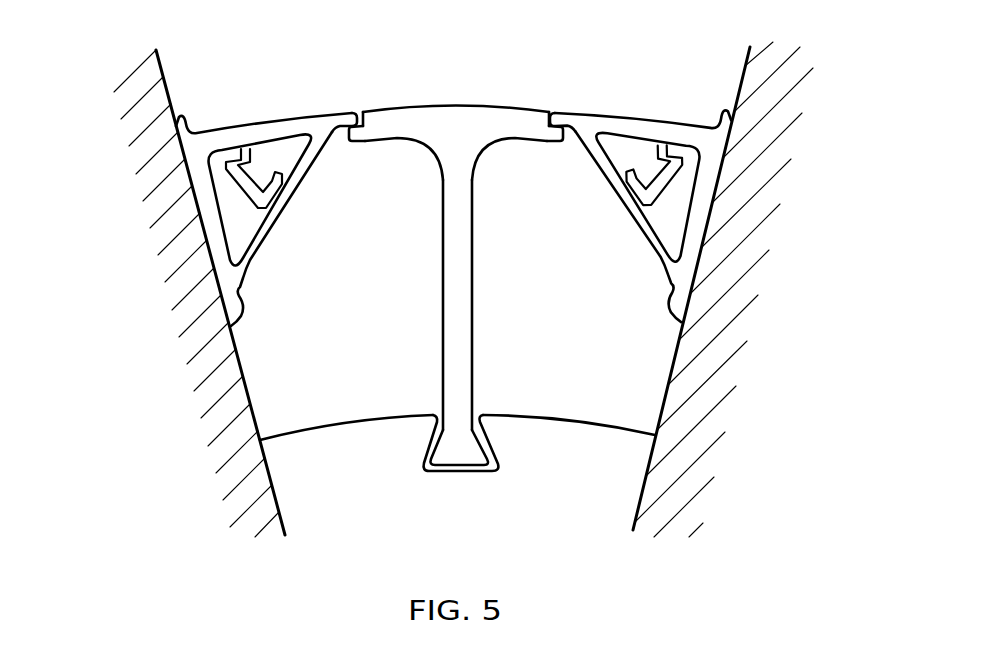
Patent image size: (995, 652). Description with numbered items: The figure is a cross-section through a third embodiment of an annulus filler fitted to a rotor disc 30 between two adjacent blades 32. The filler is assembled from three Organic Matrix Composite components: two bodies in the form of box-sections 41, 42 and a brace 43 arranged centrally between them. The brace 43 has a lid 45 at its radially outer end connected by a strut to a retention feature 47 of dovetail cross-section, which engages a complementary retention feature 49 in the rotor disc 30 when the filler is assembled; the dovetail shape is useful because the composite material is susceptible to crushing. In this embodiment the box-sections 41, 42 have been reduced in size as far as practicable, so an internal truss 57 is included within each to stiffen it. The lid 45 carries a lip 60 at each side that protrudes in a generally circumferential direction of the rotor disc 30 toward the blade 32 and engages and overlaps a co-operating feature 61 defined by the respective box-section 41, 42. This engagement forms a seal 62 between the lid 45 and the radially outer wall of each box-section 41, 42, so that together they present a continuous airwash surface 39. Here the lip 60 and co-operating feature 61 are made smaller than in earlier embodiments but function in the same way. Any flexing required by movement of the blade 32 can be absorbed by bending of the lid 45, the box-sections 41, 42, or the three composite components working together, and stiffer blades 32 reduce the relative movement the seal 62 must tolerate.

The rotor disc 30 is at (627, 487).
The blade 32 is at (142, 81).
The continuous airwash surface 39 is at (247, 122).
The box-section 41 is at (257, 252).
The box-section 42 is at (657, 245).
The brace 43 is at (452, 192).
The lid 45 is at (463, 112).
The retention feature 47 is at (448, 448).
The complementary retention feature 49 is at (472, 481).
The internal truss 57 is at (265, 198).
The lip 60 is at (343, 122).
The co-operating feature 61 is at (353, 140).
The seal 62 is at (362, 96).